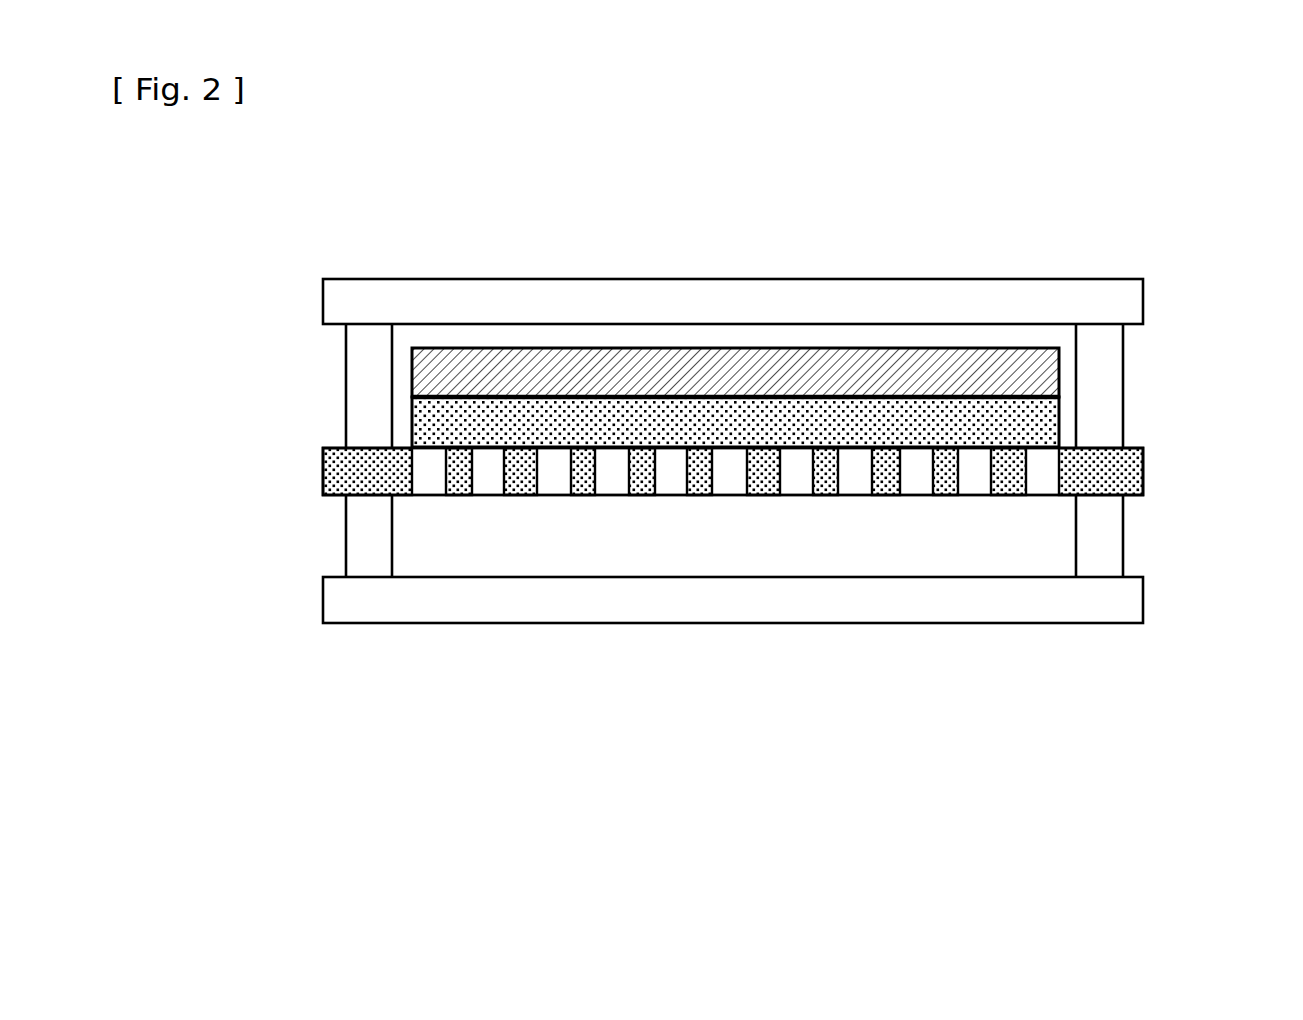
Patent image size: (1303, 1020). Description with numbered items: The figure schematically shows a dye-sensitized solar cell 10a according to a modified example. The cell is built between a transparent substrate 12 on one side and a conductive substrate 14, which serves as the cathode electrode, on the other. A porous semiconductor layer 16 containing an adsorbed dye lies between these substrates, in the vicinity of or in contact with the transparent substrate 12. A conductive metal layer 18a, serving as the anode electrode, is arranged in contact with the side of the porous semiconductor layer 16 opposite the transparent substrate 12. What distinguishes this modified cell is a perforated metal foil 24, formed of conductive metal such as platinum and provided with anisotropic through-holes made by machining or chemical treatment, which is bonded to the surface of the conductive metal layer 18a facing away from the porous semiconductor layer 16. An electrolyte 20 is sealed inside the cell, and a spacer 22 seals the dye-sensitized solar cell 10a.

The dye-sensitized solar cell 10a is at (802, 740).
The transparent substrate 12 is at (642, 303).
The conductive substrate 14 is at (963, 595).
The porous semiconductor layer 16 is at (1048, 381).
The conductive metal layer 18a is at (1059, 419).
The electrolyte 20 is at (1008, 537).
The spacer 22 is at (360, 533).
The perforated metal foil 24 is at (1083, 473).